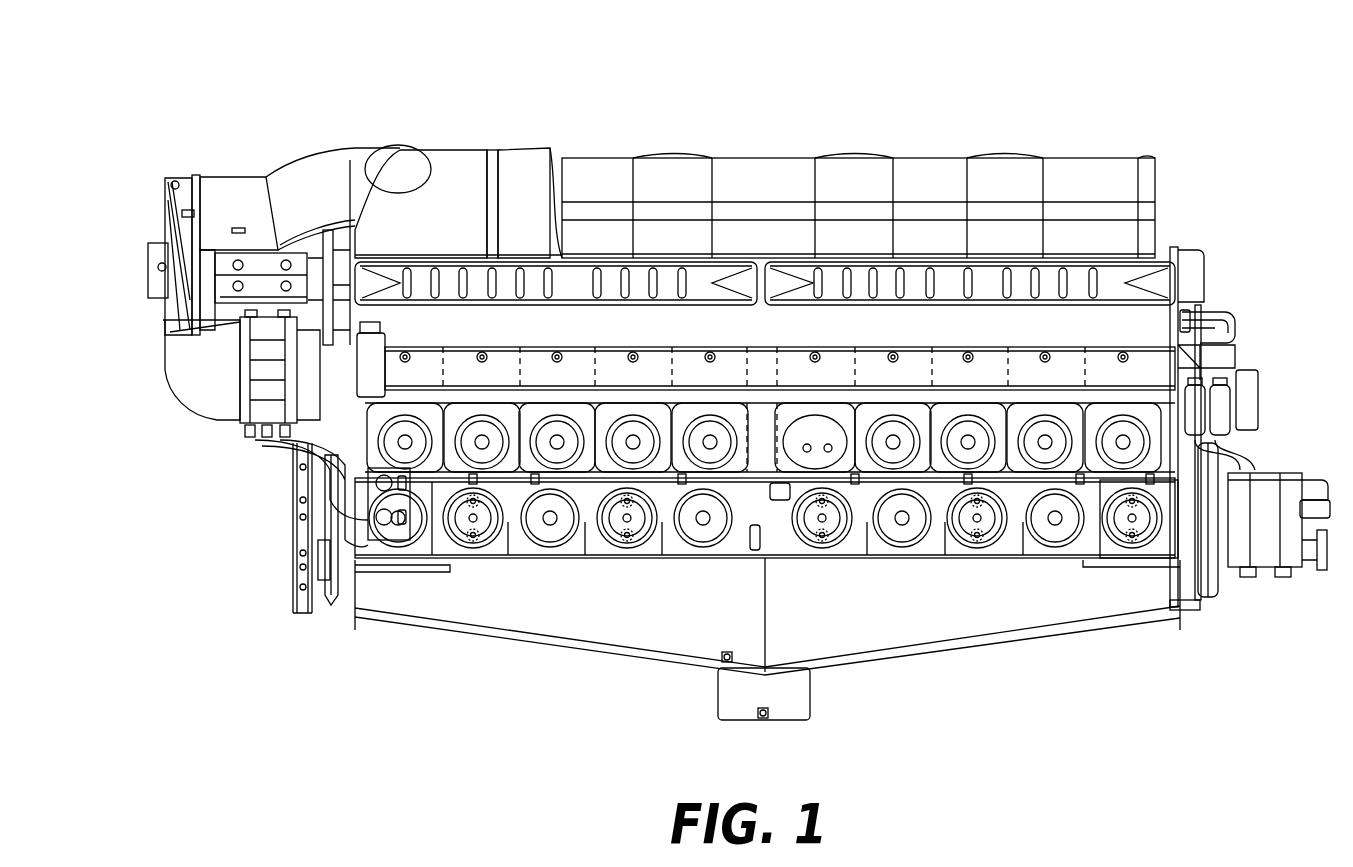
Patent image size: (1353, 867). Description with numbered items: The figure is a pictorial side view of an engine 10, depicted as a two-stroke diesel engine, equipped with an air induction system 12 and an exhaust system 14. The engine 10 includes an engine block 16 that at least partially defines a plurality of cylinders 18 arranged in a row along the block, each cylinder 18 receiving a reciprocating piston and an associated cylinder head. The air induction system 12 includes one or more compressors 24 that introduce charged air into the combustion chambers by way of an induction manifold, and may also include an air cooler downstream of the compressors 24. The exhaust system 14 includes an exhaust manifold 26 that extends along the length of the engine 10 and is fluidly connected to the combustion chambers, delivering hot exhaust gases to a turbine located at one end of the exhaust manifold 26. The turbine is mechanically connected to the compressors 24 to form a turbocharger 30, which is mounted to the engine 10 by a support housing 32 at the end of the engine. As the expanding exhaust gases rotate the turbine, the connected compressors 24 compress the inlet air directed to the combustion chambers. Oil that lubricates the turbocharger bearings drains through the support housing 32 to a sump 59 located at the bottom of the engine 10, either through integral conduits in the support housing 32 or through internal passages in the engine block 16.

The engine 10 is at (700, 385).
The air induction system 12 is at (125, 266).
The exhaust system 14 is at (1172, 184).
The engine block 16 is at (810, 387).
The cylinder 18 is at (1083, 388).
The compressor 24 is at (182, 170).
The exhaust manifold 26 is at (781, 186).
The turbocharger 30 is at (235, 244).
The support housing 32 is at (340, 250).
The sump 59 is at (812, 692).